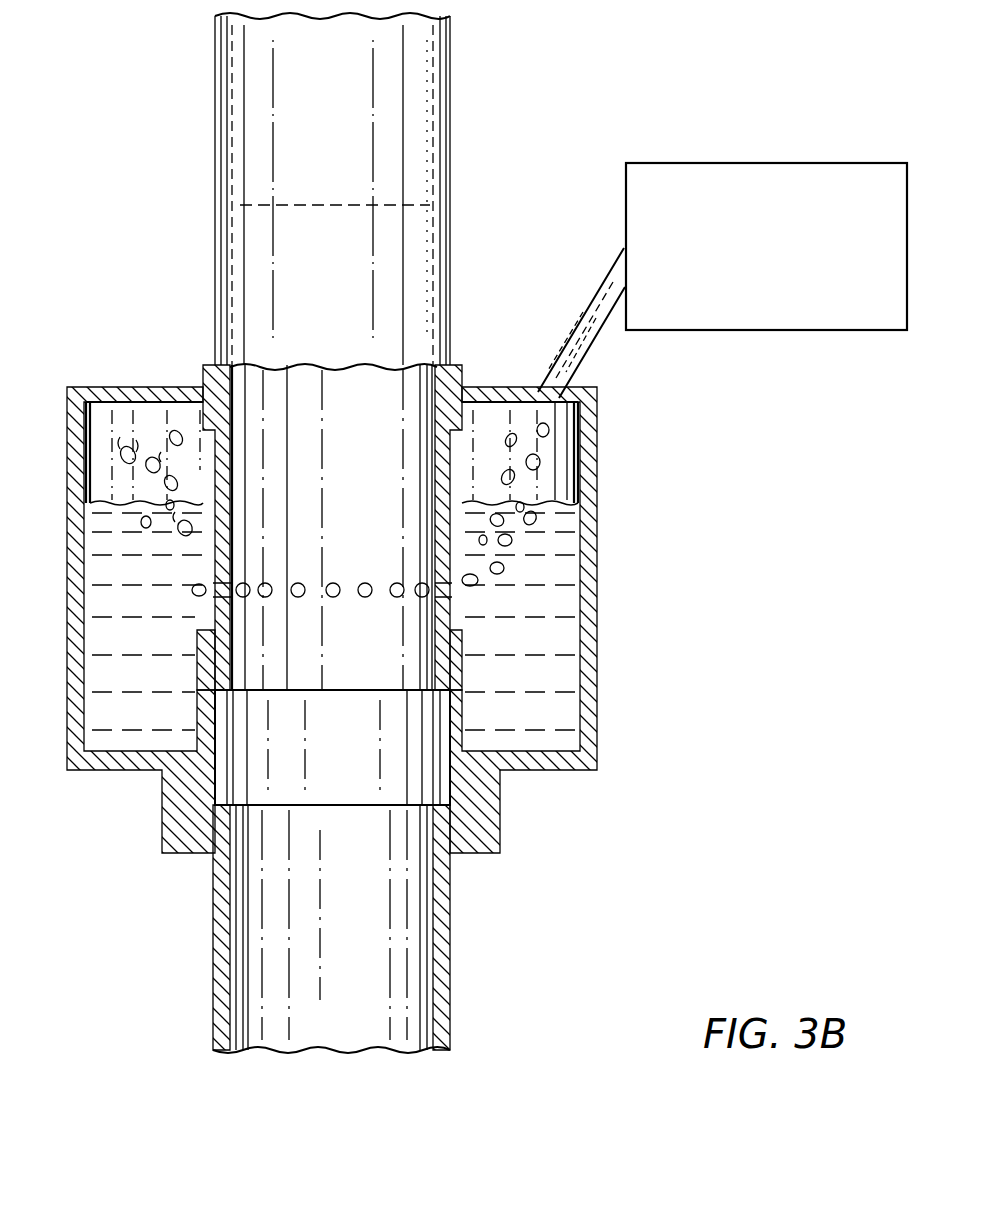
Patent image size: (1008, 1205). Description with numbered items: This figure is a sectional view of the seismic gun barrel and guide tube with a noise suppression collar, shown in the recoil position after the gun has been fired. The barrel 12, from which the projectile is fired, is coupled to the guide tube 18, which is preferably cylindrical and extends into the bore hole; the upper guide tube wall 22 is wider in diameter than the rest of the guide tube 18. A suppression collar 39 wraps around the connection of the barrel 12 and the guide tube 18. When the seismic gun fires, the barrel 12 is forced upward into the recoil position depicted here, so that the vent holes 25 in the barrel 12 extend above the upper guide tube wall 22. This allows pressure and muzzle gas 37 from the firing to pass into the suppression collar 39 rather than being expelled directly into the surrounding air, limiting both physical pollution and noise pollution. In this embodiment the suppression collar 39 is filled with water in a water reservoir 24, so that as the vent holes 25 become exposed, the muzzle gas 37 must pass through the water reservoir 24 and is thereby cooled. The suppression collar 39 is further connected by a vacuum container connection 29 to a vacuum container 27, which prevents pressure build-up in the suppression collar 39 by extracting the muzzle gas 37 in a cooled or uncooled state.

The barrel 12 is at (213, 110).
The guide tube 18 is at (212, 948).
The upper guide tube wall 22 is at (197, 660).
The water reservoir 24 is at (558, 637).
The vent holes 25 is at (336, 588).
The vacuum container 27 is at (838, 163).
The vacuum container connection 29 is at (598, 292).
The muzzle gas 37 is at (537, 517).
The suppression collar 39 is at (598, 698).